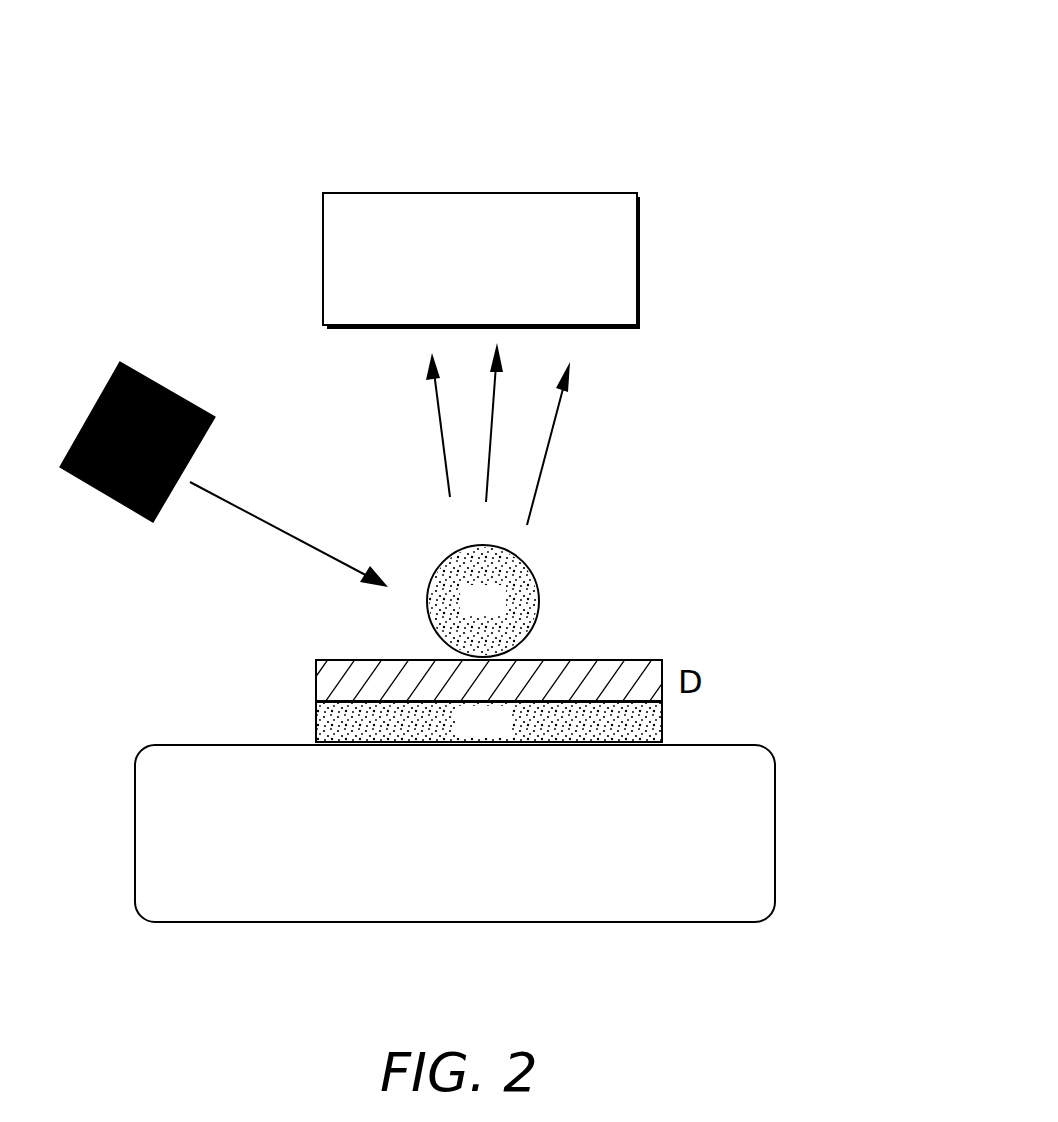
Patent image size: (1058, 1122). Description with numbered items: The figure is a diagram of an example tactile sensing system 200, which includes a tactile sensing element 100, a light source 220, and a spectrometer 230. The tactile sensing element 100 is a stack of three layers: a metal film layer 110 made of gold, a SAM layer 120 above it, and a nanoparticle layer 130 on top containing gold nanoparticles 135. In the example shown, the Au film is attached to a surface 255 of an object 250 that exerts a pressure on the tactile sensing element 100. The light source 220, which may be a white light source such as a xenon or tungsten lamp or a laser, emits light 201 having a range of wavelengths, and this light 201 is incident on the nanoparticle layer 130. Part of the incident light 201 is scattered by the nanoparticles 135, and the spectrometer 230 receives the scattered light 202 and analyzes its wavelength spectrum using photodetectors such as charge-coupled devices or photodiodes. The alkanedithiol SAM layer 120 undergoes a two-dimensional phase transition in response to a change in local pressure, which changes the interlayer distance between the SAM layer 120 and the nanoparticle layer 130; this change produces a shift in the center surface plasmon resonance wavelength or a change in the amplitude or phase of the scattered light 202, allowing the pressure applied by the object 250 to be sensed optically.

The tactile sensing element 100 is at (870, 550).
The metal film layer 110 is at (663, 723).
The SAM layer 120 is at (663, 667).
The nanoparticle layer 130 is at (654, 639).
The gold nanoparticles 135 is at (540, 573).
The tactile sensing system 200 is at (530, 58).
The light 201 is at (243, 510).
The scattered light 202 is at (450, 473).
The light source 220 is at (153, 377).
The spectrometer 230 is at (620, 192).
The object 250 is at (733, 850).
The surface 255 is at (200, 745).